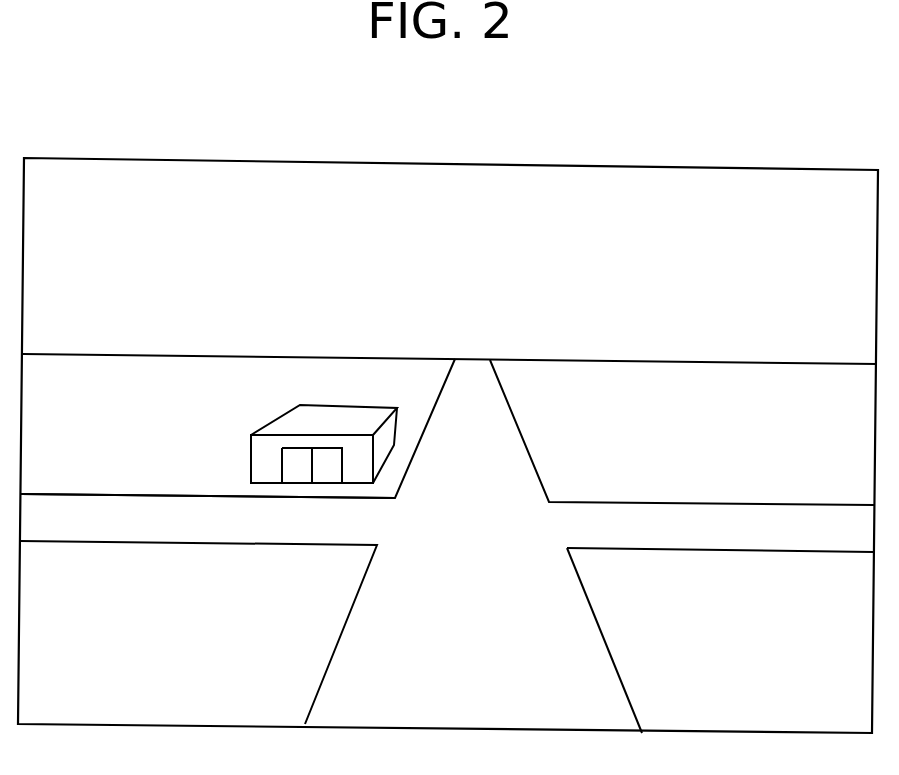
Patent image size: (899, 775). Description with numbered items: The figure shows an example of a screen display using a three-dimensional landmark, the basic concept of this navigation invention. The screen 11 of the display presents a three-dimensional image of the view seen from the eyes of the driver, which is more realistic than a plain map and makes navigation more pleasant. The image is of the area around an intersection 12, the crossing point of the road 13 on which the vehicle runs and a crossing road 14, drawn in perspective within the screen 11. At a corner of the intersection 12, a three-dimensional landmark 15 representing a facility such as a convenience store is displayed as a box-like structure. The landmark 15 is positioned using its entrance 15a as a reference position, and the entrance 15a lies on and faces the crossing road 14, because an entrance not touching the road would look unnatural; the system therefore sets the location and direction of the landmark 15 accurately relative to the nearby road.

The screen 11 is at (176, 158).
The intersection 12 is at (316, 580).
The road 13 is at (338, 693).
The crossing road 14 is at (102, 530).
The three-dimensional land mark 15 is at (281, 421).
The entrance 15a is at (298, 482).